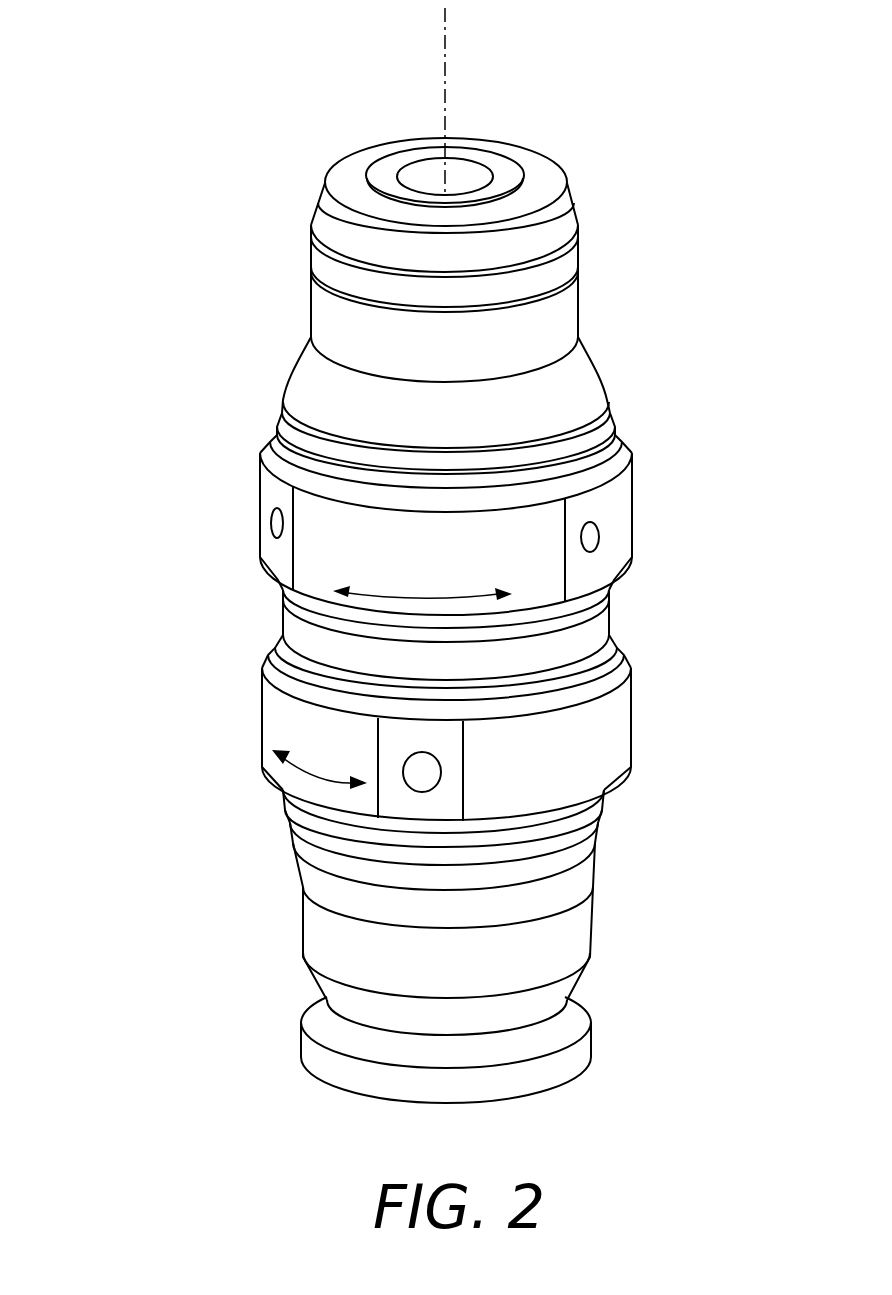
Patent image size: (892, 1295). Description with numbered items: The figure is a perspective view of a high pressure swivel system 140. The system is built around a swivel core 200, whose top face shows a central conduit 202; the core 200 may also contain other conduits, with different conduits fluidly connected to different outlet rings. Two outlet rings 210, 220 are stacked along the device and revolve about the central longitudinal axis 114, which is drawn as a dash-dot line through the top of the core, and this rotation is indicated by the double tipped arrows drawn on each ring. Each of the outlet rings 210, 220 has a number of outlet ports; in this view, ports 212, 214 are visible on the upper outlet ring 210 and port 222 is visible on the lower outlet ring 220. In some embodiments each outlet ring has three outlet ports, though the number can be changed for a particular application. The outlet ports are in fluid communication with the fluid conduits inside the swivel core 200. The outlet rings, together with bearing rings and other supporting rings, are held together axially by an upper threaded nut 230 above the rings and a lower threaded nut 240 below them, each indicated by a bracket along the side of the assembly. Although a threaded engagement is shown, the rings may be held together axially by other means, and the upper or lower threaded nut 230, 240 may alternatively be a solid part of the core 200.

The high pressure swivel system 140 is at (182, 158).
The central longitudinal axis 114 is at (447, 80).
The swivel core 200 is at (382, 173).
The central conduit 202 is at (476, 175).
The upper threaded nut 230 is at (648, 172).
The outlet ring 210 is at (437, 568).
The outlet port 212 is at (271, 522).
The outlet port 214 is at (592, 537).
The outlet ring 220 is at (567, 772).
The outlet port 222 is at (413, 763).
The lower threaded nut 240 is at (653, 930).